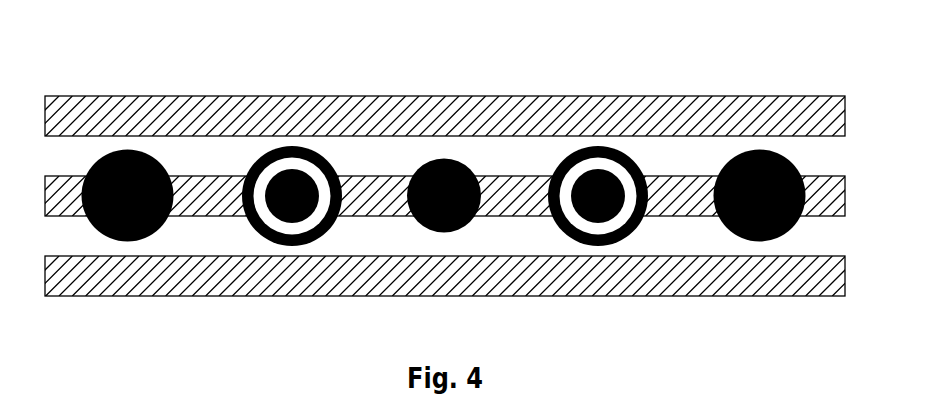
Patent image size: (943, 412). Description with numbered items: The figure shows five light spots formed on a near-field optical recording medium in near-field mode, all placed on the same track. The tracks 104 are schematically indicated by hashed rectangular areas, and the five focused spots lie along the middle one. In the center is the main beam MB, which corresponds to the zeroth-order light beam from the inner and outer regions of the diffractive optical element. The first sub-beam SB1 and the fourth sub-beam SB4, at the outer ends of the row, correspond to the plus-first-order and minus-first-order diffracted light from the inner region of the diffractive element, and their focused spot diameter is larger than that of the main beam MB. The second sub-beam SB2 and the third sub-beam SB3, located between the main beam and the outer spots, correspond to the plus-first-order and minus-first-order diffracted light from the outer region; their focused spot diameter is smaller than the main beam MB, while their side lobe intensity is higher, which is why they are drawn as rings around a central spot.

The tracks 104 is at (363, 97).
The first sub-beam SB1 is at (128, 245).
The second sub-beam SB2 is at (292, 242).
The main beam MB is at (444, 249).
The third sub-beam SB3 is at (598, 242).
The fourth sub-beam SB4 is at (760, 245).